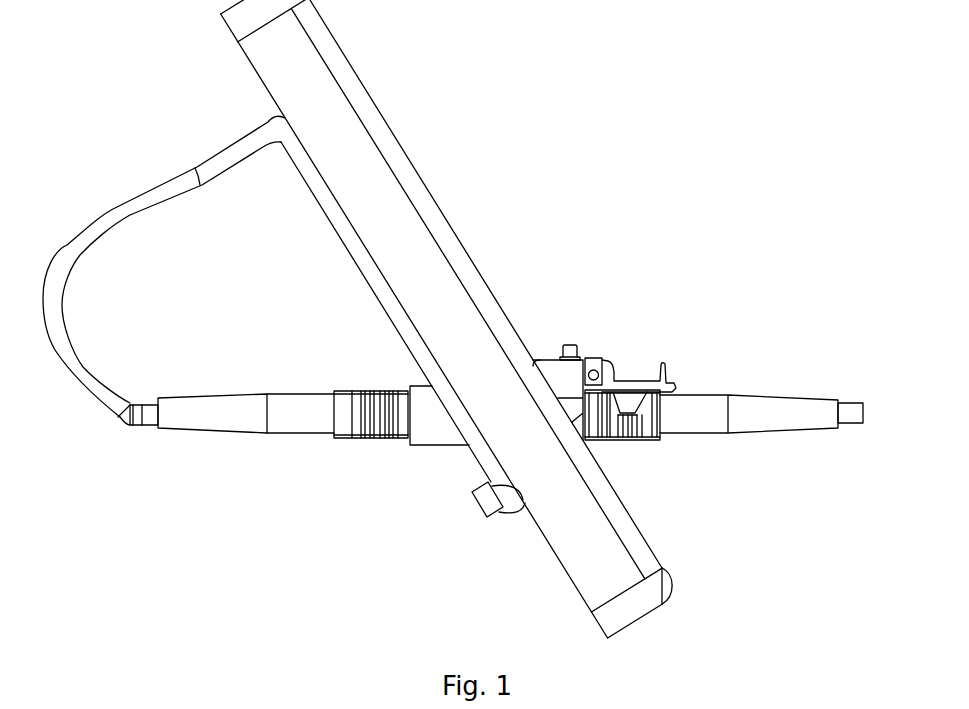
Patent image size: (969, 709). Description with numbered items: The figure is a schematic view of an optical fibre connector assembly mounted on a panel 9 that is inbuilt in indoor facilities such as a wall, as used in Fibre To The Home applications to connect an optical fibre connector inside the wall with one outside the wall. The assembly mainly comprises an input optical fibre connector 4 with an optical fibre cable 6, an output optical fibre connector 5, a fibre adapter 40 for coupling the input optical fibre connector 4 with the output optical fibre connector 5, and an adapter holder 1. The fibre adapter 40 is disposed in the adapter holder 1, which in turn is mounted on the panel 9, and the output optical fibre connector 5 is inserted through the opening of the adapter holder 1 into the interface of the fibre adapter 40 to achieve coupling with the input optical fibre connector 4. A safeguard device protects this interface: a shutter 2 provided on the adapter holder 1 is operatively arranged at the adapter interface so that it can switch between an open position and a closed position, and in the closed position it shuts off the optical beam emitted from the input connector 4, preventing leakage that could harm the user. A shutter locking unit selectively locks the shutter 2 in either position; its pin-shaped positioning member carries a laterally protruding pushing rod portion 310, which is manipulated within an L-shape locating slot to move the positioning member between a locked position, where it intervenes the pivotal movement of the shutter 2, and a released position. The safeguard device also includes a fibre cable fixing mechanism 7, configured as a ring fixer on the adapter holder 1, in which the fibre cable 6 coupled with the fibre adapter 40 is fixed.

The adapter holder 1 is at (557, 373).
The shutter 2 is at (630, 383).
The pushing rod portion 310 is at (572, 345).
The input optical fibre connector 4 is at (373, 422).
The fibre adapter 40 is at (443, 430).
The output optical fibre connector 5 is at (653, 438).
The optical fibre cable 6 is at (120, 220).
The fibre cable fixing mechanism 7 is at (515, 505).
The panel 9 is at (398, 212).